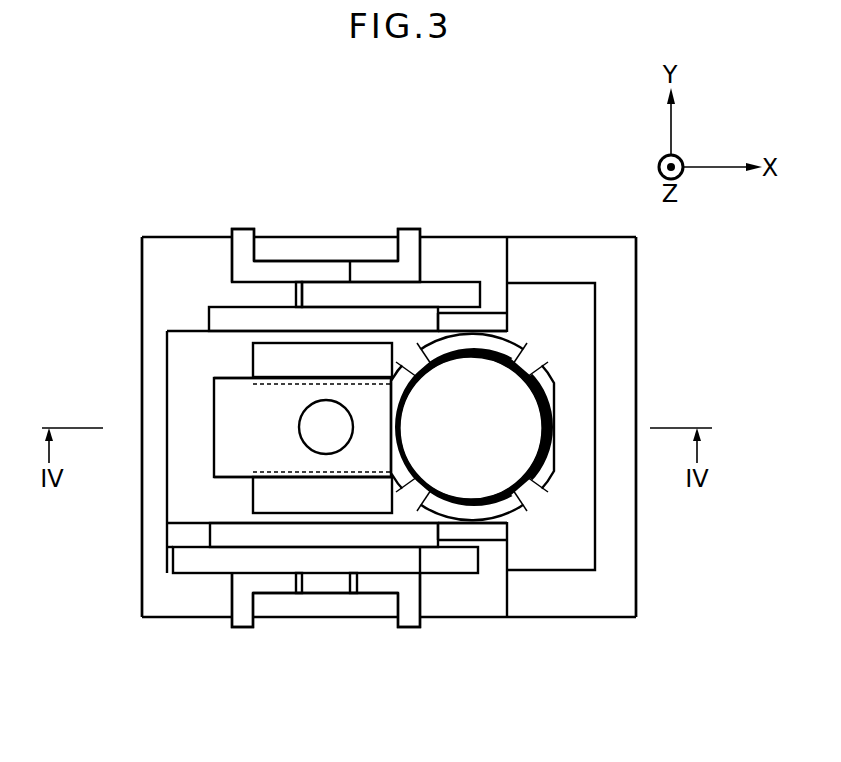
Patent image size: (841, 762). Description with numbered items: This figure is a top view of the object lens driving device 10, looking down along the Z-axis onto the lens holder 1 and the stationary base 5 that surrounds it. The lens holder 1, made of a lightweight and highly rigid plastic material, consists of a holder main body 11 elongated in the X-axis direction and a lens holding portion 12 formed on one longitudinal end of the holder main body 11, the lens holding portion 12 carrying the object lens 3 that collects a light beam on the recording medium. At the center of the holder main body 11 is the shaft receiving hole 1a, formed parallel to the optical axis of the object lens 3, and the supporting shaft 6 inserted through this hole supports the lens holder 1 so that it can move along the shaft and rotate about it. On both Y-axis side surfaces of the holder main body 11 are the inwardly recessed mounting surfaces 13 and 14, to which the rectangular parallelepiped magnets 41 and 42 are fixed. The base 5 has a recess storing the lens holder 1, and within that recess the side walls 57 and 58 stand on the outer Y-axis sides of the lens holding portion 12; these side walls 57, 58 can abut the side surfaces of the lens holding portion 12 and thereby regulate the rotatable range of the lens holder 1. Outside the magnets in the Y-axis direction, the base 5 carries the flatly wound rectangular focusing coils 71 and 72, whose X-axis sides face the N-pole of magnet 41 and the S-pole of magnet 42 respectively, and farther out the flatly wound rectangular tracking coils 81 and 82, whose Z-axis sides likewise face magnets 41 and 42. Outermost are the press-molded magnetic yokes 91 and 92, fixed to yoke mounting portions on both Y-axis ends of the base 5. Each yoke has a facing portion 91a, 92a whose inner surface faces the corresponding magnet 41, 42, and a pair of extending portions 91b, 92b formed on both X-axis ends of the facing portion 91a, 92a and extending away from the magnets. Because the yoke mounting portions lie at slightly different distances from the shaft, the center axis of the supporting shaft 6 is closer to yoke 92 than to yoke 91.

The object lens driving device 10 is at (128, 208).
The lens holder 1 is at (206, 412).
The shaft receiving hole 1a is at (318, 416).
The object lens 3 is at (518, 400).
The base 5 is at (612, 583).
The supporting shaft 6 is at (298, 420).
The holder main body 11 is at (227, 458).
The lens holding portion 12 is at (556, 403).
The mounting surface 13 is at (373, 384).
The mounting surface 14 is at (283, 472).
The magnet 41 is at (256, 355).
The magnet 42 is at (253, 495).
The side wall 57 is at (497, 318).
The side wall 58 is at (490, 537).
The focusing coil 71 is at (410, 318).
The focusing coil 72 is at (420, 533).
The tracking coil 81 is at (478, 295).
The tracking coil 82 is at (178, 562).
The yoke 91 is at (465, 165).
The facing portion 91a is at (333, 270).
The extending portions 91b is at (242, 238).
The yoke 92 is at (445, 690).
The facing portion 92a is at (325, 582).
The extending portions 92b is at (245, 614).